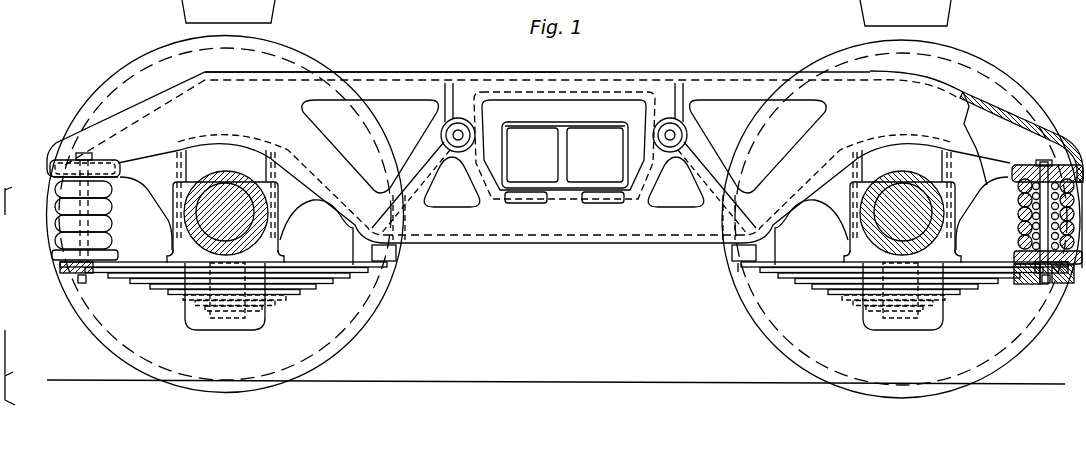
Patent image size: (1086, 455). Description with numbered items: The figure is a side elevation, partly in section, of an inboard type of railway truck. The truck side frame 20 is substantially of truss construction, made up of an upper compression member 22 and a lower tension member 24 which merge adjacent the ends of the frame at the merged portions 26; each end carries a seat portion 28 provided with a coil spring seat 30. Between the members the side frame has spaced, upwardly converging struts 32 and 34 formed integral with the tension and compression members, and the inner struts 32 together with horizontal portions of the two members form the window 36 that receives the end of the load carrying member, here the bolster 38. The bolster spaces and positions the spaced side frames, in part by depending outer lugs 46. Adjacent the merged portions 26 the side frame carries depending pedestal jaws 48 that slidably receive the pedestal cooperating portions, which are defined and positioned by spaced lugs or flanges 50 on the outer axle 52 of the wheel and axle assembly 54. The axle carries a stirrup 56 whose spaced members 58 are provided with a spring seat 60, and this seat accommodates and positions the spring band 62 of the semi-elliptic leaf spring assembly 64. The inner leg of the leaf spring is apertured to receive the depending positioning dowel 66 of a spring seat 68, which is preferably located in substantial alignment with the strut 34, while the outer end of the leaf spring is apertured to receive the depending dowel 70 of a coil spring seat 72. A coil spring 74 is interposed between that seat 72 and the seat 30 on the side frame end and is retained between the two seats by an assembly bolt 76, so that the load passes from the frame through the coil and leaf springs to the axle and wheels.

The truck side frame 20 is at (450, 72).
The upper compression member 22 is at (655, 80).
The lower tension member 24 is at (565, 226).
The merged portions 26 is at (207, 80).
The seat portion 28 is at (1003, 133).
The coil spring seat 30 is at (1062, 165).
The inner struts 32 is at (478, 184).
The struts 34 is at (412, 163).
The window 36 is at (556, 105).
The bolster 38 is at (532, 122).
The outer lugs 46 is at (520, 203).
The pedestal jaws 48 is at (157, 197).
The lugs or flanges 50 is at (282, 240).
The outer axle 52 is at (226, 172).
The wheel and axle assembly 54 is at (993, 62).
The stirrup 56 is at (853, 265).
The spaced members 58 is at (262, 258).
The spring seat 60 is at (258, 316).
The spring band 62 is at (232, 308).
The semi-elliptic leaf spring assembly 64 is at (165, 292).
The positioning dowel 66 is at (396, 282).
The spring seat 68 is at (405, 252).
The dowel 70 is at (1045, 288).
The coil spring seat 72 is at (1015, 258).
The coil spring 74 is at (65, 205).
The assembly bolt 76 is at (1046, 160).